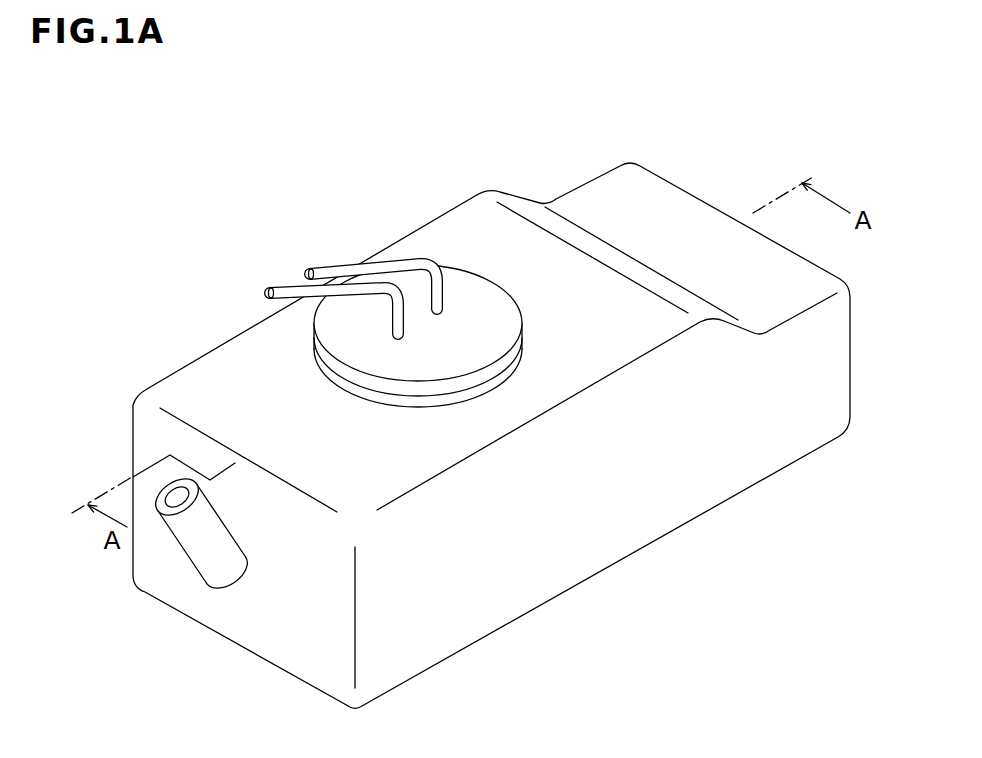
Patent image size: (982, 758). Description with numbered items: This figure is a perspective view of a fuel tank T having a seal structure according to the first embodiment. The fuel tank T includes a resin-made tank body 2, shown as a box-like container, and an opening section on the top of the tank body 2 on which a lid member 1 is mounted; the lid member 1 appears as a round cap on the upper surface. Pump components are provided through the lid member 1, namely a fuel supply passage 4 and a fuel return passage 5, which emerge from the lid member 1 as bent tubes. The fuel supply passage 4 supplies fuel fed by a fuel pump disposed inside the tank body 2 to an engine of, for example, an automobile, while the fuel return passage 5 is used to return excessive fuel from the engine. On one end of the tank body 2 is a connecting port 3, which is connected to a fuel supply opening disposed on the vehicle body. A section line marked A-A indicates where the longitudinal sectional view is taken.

The fuel tank T is at (535, 180).
The lid member 1 is at (460, 263).
The tank body 2 is at (223, 340).
The connecting port 3 is at (193, 583).
The fuel supply passage 4 is at (332, 268).
The fuel return passage 5 is at (290, 287).